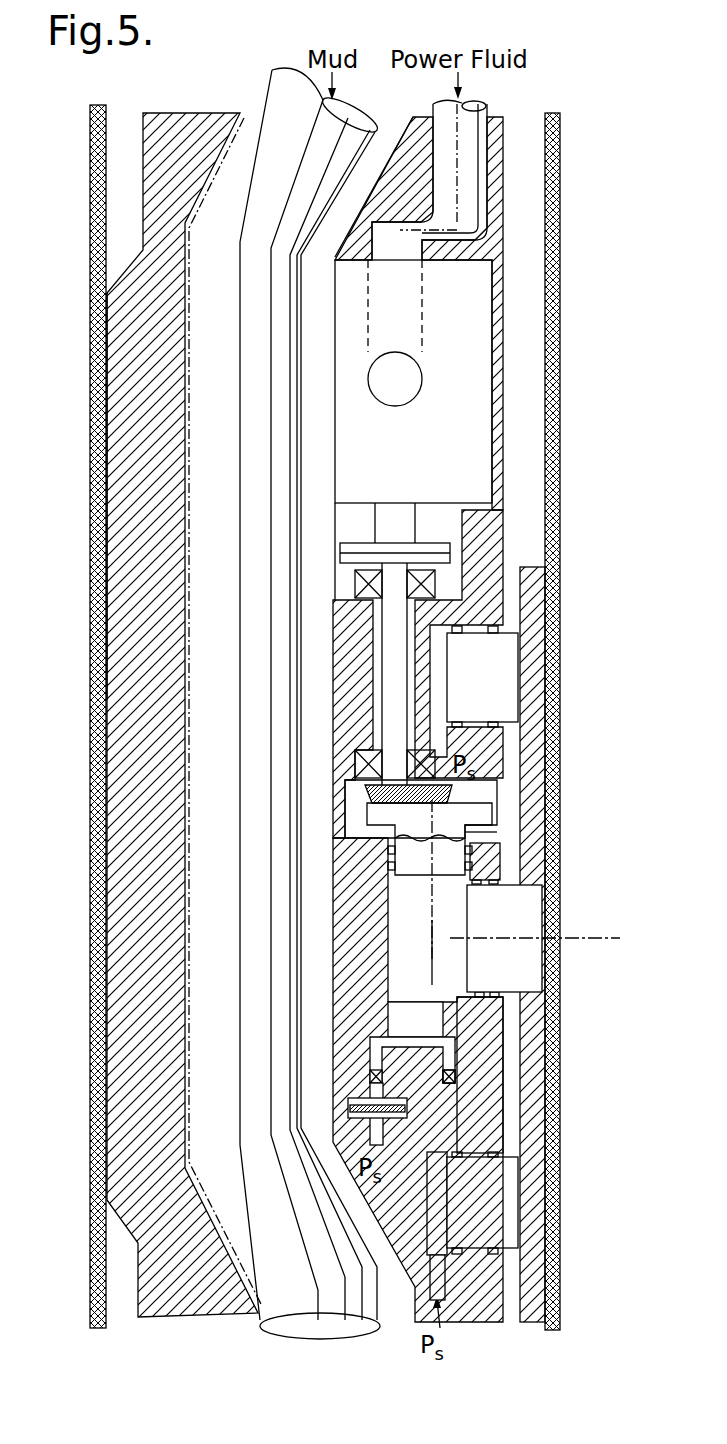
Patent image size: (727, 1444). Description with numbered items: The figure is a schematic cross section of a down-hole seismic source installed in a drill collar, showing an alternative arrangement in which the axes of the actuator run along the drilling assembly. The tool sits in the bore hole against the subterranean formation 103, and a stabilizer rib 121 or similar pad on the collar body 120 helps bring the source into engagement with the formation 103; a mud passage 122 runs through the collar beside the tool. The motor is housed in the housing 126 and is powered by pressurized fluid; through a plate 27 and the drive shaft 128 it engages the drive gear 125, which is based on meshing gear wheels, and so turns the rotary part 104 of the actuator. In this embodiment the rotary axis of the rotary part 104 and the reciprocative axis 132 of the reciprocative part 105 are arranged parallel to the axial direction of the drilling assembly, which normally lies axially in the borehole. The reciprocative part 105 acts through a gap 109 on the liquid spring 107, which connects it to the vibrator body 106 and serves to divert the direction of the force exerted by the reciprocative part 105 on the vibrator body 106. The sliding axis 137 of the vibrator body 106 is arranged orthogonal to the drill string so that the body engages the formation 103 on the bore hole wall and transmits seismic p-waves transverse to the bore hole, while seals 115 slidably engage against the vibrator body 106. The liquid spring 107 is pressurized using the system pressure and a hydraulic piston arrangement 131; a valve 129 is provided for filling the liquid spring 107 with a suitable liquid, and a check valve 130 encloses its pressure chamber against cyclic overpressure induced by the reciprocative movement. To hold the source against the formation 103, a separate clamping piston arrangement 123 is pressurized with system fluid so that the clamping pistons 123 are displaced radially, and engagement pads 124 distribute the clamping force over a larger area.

The plate 27 is at (450, 553).
The subterranean formation 103 is at (106, 178).
The rotary part 104 is at (390, 866).
The reciprocative part 105 is at (390, 815).
The vibrator body 106 is at (525, 900).
The liquid spring 107 is at (400, 972).
The gap 109 is at (480, 832).
The seals 115 is at (475, 862).
The tool body 120 is at (185, 127).
The stabilizer rib 121 is at (135, 330).
The mud passage 122 is at (238, 313).
The clamping piston arrangement 123 is at (507, 687).
The engagement pads 124 is at (535, 670).
The drive gear 125 is at (466, 793).
The housing 126 is at (437, 467).
The drive shaft 128 is at (390, 622).
The valve 129 is at (455, 1077).
The check valve 130 is at (370, 1077).
The hydraulic piston arrangement 131 is at (348, 1108).
The reciprocative axis 132 is at (432, 920).
The sliding axis 137 is at (570, 940).